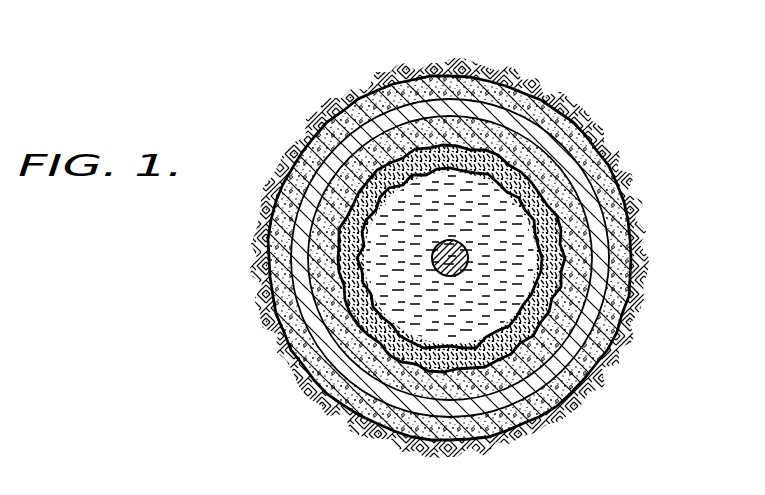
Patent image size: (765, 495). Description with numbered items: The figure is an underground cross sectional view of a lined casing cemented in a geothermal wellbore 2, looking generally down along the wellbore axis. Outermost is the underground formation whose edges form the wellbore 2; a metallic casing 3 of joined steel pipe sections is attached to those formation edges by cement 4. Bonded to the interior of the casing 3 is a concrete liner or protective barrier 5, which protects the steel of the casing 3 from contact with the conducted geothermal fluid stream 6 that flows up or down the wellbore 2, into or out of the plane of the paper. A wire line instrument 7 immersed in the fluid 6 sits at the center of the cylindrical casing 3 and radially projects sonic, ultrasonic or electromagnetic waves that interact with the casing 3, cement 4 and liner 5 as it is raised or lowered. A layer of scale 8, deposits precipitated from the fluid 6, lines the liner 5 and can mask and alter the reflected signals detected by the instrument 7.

The wellbore 2 is at (605, 187).
The metallic casing 3 is at (600, 218).
The cement 4 is at (625, 267).
The concrete liner 5 is at (576, 296).
The geothermal fluid stream 6 is at (450, 258).
The wire line instrument 7 is at (466, 257).
The scale 8 is at (475, 347).